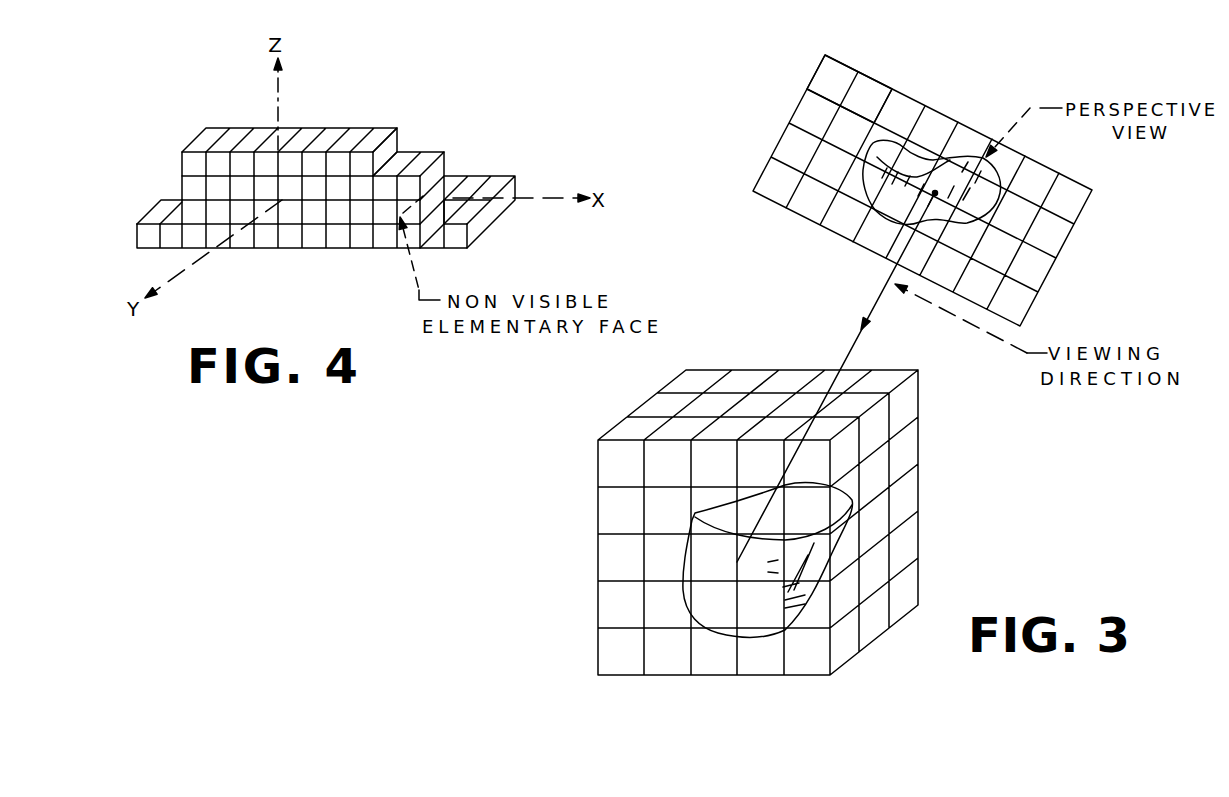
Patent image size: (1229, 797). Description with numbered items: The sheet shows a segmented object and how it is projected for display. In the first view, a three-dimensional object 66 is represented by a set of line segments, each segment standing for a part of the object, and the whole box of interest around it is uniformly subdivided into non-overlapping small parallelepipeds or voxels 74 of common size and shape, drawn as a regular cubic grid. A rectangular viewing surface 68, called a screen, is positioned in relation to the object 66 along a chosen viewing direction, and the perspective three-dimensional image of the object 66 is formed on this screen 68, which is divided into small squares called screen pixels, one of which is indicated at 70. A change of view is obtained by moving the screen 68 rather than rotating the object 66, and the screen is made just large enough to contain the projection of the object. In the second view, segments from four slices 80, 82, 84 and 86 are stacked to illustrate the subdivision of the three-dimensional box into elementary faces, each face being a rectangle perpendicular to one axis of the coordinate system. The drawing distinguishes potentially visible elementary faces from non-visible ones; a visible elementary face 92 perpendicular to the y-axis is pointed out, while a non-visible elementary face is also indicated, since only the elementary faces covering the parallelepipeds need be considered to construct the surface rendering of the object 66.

In FIG. 3, the object 66 is at (730, 640).
In FIG. 3, the viewing surface 68 is at (1057, 267).
In FIG. 3, the pixel of projection plane 70 is at (855, 92).
In FIG. 3, the voxels 74 is at (912, 590).
In FIG. 4, the slice 80 is at (180, 154).
In FIG. 4, the slice 82 is at (180, 178).
In FIG. 4, the slice 84 is at (179, 208).
In FIG. 4, the slice 86 is at (138, 230).
In FIG. 4, the visible elementary face 92 is at (386, 153).